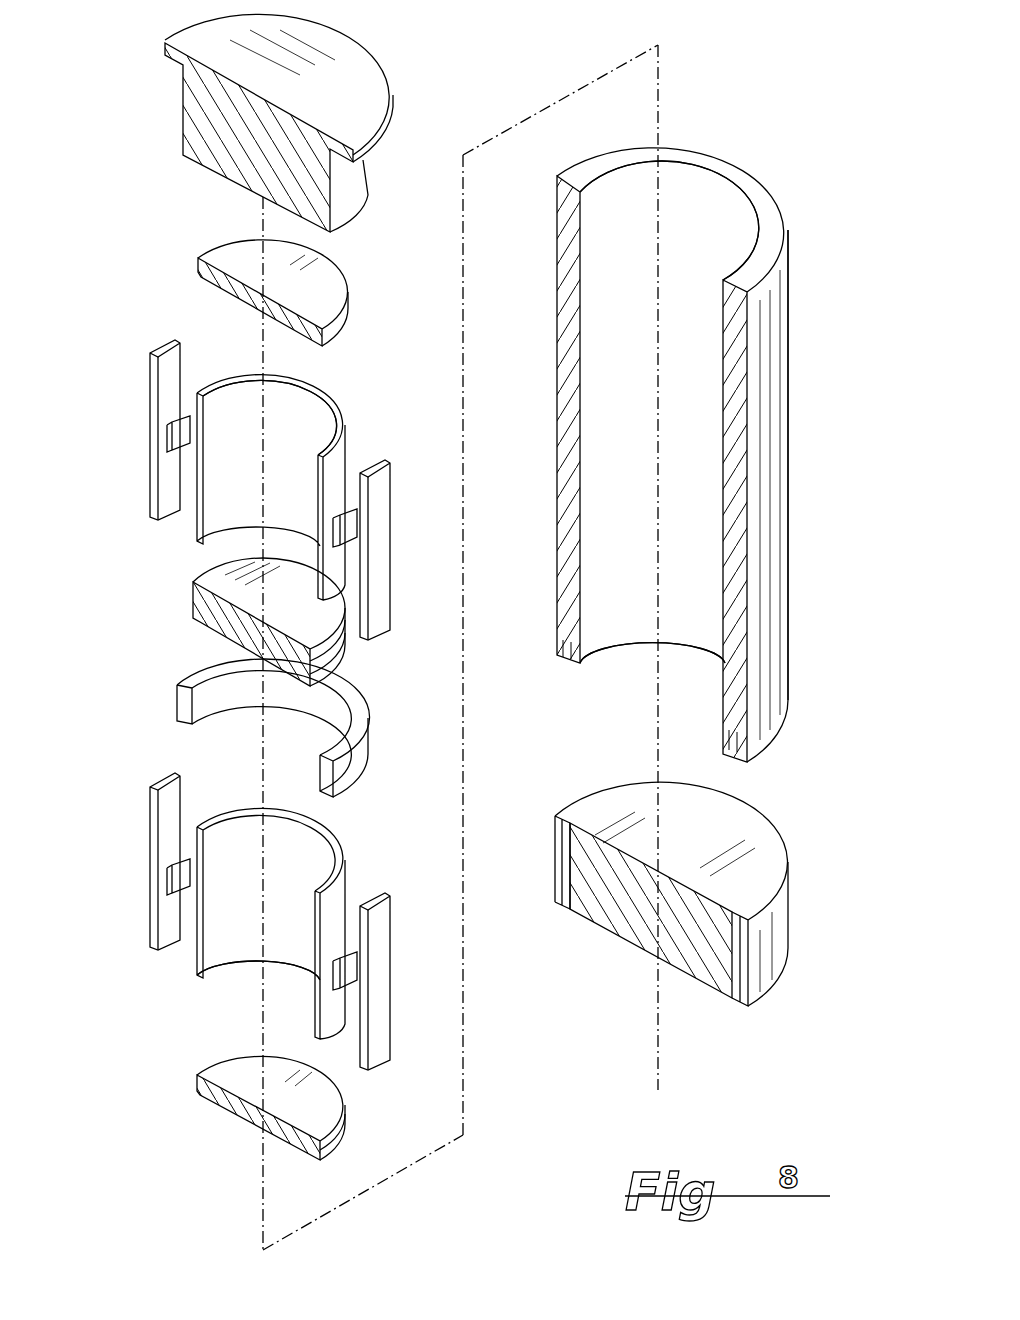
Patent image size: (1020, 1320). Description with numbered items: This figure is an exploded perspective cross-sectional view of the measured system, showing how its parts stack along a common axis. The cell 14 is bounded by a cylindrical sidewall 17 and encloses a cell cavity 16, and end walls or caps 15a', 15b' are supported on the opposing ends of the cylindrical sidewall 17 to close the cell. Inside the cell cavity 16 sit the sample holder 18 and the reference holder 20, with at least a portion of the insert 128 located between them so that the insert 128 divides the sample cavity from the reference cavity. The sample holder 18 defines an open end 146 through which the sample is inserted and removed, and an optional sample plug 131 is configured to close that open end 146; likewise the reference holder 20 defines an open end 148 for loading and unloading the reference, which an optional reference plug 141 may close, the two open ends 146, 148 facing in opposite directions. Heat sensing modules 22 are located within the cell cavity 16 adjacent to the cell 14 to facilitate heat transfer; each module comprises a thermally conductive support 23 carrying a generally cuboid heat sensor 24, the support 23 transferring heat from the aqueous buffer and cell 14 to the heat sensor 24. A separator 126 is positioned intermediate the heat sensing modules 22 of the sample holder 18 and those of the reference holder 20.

The cell 14 is at (712, 160).
The cell cavity 16 is at (605, 245).
The cylindrical sidewall 17 is at (790, 510).
The end wall or cap 15a' is at (305, 123).
The end wall or cap 15b' is at (661, 906).
The sample plug 131 is at (215, 300).
The sample holder 18 is at (221, 487).
The open end 146 is at (312, 386).
The insert 128 is at (240, 602).
The separator 126 is at (350, 664).
The reference holder 20 is at (343, 818).
The open end 148 is at (238, 975).
The reference plug 141 is at (232, 1118).
The heat sensing module 22 is at (160, 338).
The support 23 is at (212, 495).
The heat sensor 24 is at (180, 445).